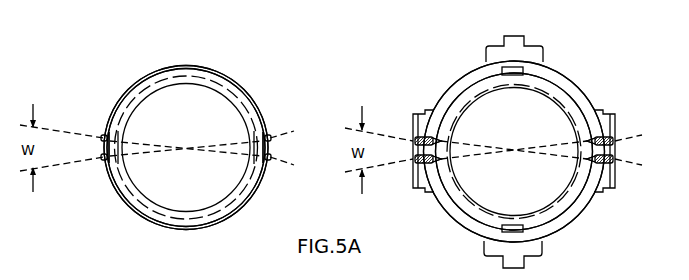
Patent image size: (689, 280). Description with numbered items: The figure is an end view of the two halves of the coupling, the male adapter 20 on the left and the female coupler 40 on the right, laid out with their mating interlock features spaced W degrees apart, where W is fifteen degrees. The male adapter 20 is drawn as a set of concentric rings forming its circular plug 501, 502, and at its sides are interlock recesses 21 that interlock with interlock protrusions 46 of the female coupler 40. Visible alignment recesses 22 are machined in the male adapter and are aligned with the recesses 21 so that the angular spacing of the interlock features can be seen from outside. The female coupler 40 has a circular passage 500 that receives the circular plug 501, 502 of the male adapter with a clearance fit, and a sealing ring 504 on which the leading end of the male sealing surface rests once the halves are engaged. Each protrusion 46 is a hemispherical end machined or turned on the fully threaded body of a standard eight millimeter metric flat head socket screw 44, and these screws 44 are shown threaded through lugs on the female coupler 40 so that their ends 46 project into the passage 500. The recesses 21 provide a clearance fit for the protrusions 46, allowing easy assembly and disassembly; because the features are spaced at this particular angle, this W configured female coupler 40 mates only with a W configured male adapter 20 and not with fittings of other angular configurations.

The male adapter 20 is at (249, 80).
The interlock recess 21 is at (108, 137).
The alignment recess 22 is at (101, 136).
The circular plug of the male adapter 501 is at (140, 78).
The circular plug of the male adapter 502 is at (170, 67).
The female coupler 40 is at (431, 84).
The flat head socket screw 44 is at (416, 138).
The interlock protrusion 46 is at (444, 140).
The circular passage of the female coupler 500 is at (584, 106).
The sealing ring 504 is at (559, 90).